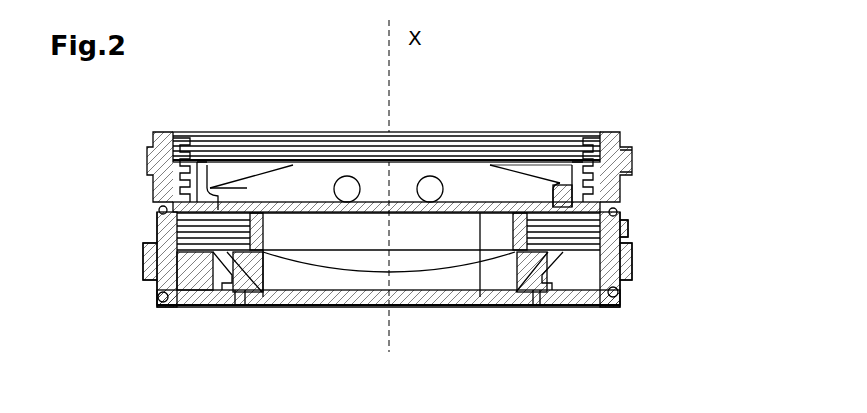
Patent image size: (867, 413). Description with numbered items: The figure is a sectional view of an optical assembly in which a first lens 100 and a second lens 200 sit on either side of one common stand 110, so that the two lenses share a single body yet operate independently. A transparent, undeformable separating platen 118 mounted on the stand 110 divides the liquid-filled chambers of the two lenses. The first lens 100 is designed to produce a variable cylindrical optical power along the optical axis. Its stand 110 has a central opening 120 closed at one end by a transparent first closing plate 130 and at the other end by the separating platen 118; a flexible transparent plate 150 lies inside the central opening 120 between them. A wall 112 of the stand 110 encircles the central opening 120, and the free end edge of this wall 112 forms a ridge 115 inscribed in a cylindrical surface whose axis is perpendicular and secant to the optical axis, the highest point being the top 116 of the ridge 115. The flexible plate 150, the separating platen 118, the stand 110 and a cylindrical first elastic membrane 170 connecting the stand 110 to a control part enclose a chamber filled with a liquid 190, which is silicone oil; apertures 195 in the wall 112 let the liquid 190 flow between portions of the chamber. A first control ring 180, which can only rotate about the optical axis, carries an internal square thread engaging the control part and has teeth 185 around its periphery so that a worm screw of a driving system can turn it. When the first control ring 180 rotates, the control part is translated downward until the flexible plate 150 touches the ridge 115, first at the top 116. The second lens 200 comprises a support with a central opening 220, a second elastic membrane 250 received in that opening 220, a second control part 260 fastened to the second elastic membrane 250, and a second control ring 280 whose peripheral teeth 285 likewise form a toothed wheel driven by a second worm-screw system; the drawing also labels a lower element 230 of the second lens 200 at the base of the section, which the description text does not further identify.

The first lens 100 is at (662, 170).
The stand 110 is at (629, 226).
The wall 112 is at (483, 183).
The ridge 115 is at (258, 165).
The top of the ridge 116 is at (392, 178).
The separating platen 118 is at (480, 265).
The central opening 120 is at (373, 179).
The first closing plate 130 is at (283, 160).
The flexible transparent plate 150 is at (572, 167).
The first elastic membrane 170 is at (153, 182).
The first control ring 180 is at (610, 150).
The teeth 185 is at (633, 160).
The liquid 190 is at (303, 180).
The apertures 195 is at (433, 175).
The second lens 200 is at (668, 253).
The central opening 220 is at (413, 238).
The base plate 230 is at (443, 302).
The second elastic membrane 250 is at (321, 272).
The second control part 260 is at (195, 268).
The second control ring 280 is at (147, 250).
The teeth 285 is at (633, 277).